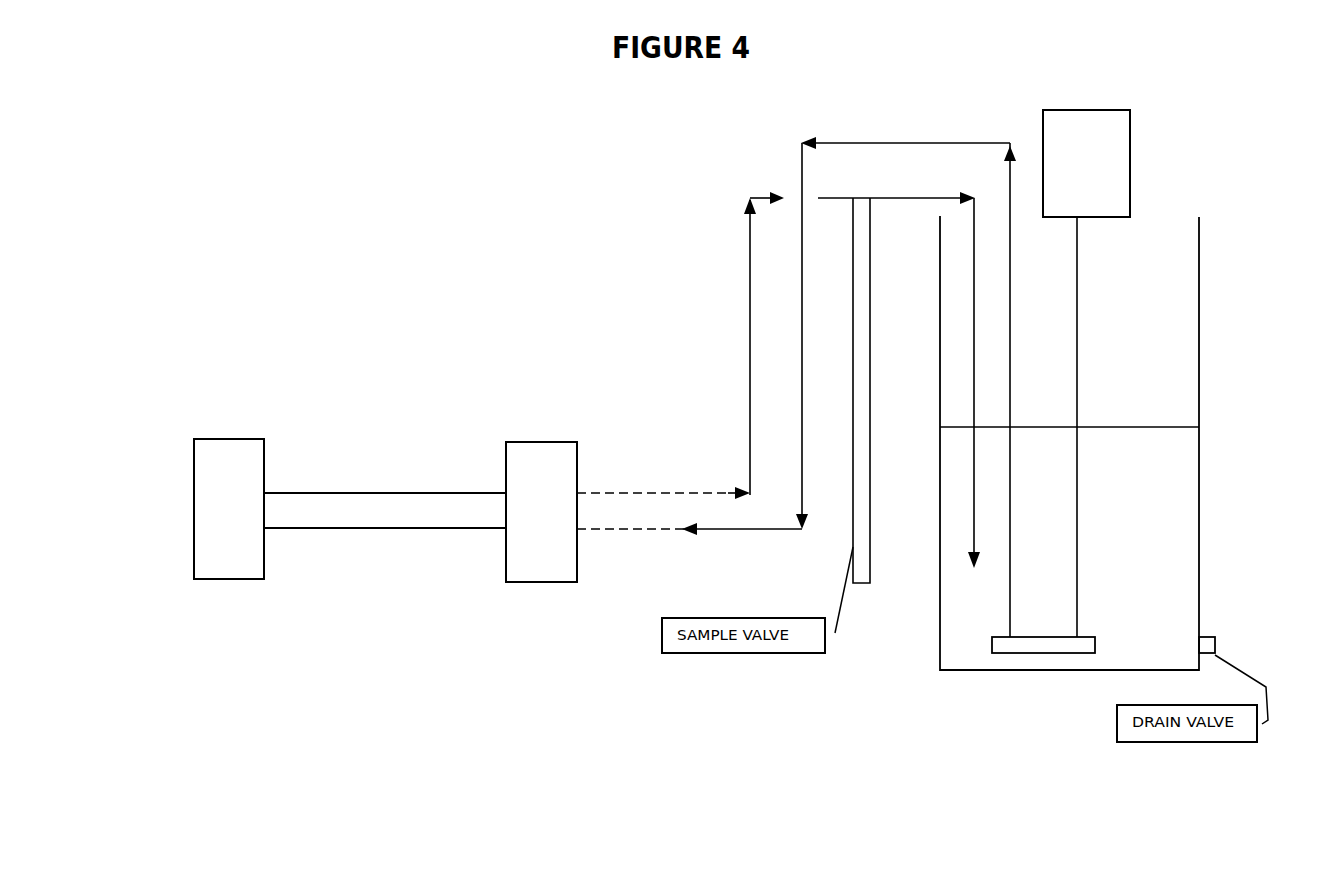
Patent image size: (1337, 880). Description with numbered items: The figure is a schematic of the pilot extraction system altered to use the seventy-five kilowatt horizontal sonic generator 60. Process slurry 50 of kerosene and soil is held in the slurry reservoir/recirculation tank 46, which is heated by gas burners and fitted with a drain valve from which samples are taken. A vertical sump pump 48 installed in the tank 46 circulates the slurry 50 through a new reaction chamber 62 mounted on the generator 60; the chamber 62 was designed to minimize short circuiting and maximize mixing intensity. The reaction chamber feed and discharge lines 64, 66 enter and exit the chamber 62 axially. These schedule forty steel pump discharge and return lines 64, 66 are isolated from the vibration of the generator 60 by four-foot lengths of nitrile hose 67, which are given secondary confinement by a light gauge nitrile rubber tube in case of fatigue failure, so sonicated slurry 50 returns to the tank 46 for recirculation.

The slurry reservoir/recirculation tank 46 is at (1153, 478).
The vertical sump pump 48 is at (1132, 162).
The slurry 50 is at (747, 248).
The 75 kW generator 60 is at (367, 528).
The reaction chamber 62 is at (538, 582).
The feed line 64 is at (773, 529).
The discharge line 66 is at (747, 357).
The nitrile hose 67 is at (645, 493).